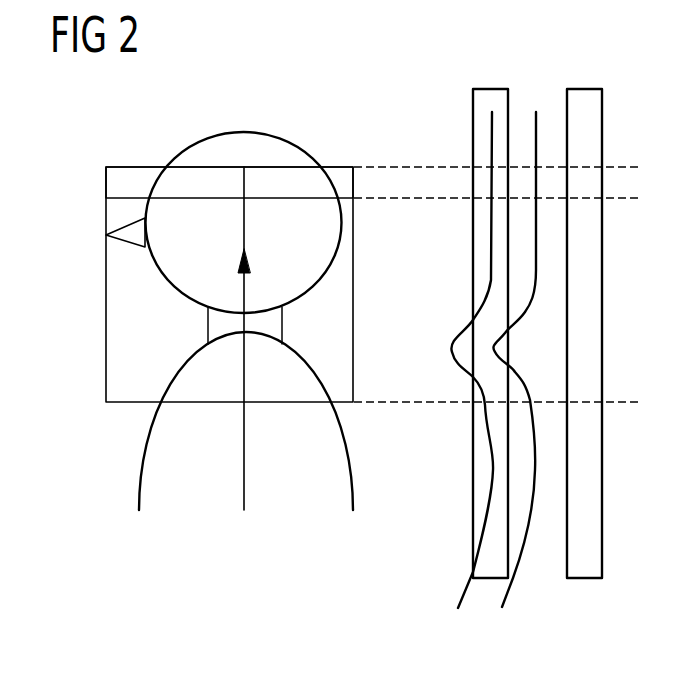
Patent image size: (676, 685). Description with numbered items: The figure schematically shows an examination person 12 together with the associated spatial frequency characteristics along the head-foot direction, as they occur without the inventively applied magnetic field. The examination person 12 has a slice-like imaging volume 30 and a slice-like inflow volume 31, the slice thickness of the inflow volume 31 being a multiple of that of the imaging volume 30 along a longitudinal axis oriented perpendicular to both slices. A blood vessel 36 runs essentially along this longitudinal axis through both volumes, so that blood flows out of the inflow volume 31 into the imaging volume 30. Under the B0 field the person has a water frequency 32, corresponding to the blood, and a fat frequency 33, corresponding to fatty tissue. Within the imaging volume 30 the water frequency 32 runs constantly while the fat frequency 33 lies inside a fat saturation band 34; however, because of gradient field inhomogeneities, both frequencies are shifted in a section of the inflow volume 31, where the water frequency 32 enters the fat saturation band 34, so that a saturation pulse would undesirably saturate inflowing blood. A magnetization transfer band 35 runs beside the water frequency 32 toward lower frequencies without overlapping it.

The examination person 12 is at (266, 92).
The imaging volume 30 is at (112, 185).
The inflow volume 31 is at (112, 302).
The water frequency 32 is at (510, 598).
The fat frequency 33 is at (462, 592).
The fat saturation band 34 is at (488, 89).
The magnetization transfer band 35 is at (585, 89).
The blood vessel 36 is at (244, 460).